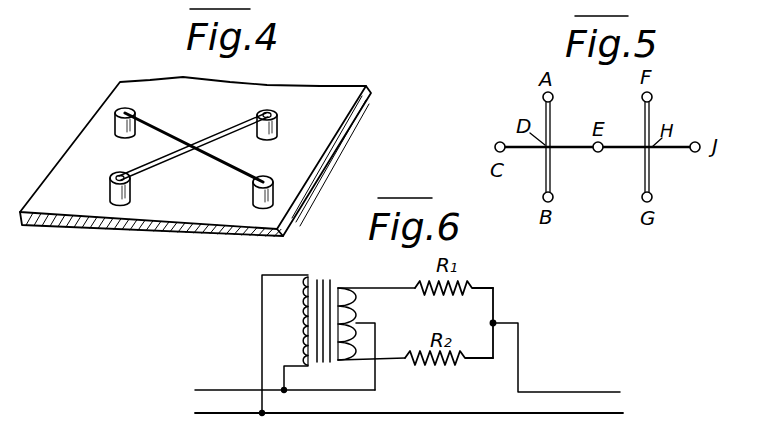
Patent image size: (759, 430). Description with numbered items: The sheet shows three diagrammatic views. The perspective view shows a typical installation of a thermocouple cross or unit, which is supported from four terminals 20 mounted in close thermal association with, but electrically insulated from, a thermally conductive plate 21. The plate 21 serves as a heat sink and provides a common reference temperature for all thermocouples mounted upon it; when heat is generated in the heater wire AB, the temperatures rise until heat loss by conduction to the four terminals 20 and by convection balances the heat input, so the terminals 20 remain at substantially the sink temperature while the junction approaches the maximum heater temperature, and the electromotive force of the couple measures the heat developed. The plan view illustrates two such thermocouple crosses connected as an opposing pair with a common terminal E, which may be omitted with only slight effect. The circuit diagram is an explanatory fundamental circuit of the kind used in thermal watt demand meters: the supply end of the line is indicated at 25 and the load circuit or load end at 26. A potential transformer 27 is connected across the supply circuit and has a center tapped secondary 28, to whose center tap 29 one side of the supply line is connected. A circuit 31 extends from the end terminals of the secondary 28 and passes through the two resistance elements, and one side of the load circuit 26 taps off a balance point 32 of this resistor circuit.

In FIG. 4, the terminals 20 is at (114, 125).
In FIG. 4, the thermally conductive plate 21 is at (73, 223).
In FIG. 6, the supply end of the line 25 is at (396, 403).
In FIG. 6, the load circuit 26 is at (558, 369).
In FIG. 6, the potential transformer 27 is at (322, 278).
In FIG. 6, the center tapped secondary 28 is at (350, 290).
In FIG. 6, the center tap 29 is at (356, 323).
In FIG. 6, the circuit 31 is at (497, 291).
In FIG. 6, the balance point 32 is at (495, 323).